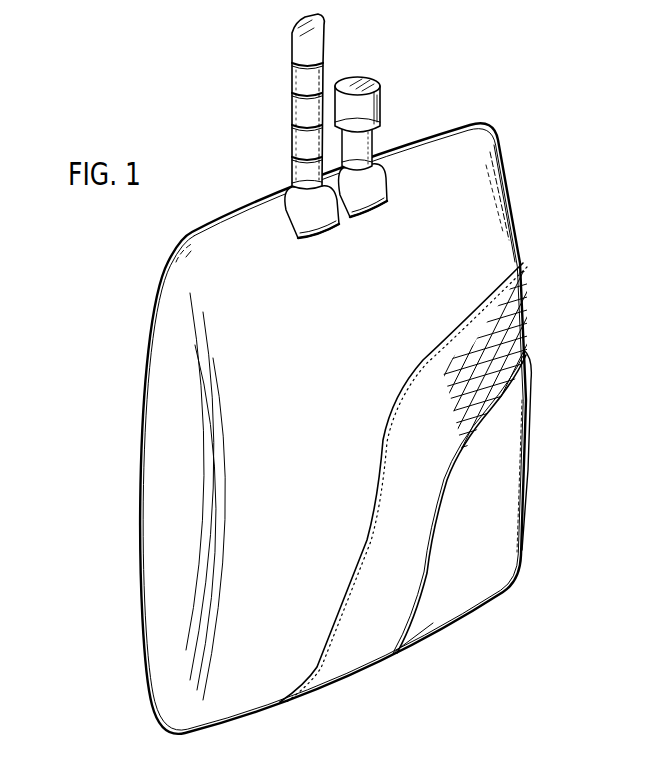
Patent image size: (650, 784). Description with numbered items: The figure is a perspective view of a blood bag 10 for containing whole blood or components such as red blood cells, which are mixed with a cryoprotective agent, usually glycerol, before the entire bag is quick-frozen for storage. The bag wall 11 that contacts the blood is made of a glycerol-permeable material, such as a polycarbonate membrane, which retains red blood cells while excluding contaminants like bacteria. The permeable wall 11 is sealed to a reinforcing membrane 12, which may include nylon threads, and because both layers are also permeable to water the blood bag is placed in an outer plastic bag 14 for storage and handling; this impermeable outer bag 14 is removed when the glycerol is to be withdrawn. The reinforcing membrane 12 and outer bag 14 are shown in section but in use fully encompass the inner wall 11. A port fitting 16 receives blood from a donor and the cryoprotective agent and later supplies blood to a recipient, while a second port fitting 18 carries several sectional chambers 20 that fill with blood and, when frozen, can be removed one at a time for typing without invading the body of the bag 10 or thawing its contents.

The blood bag 10 is at (134, 362).
The bag wall 11 is at (483, 192).
The reinforcing membrane 12 is at (512, 298).
The outer plastic container or bag 14 is at (531, 402).
The port fitting 16 is at (353, 134).
The second port fitting 18 is at (272, 101).
The sectional chambers 20 is at (297, 141).